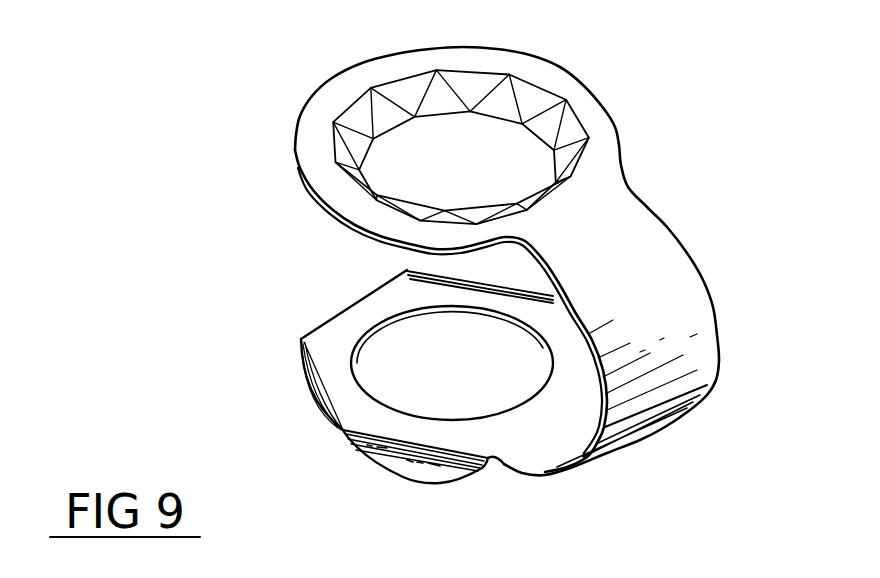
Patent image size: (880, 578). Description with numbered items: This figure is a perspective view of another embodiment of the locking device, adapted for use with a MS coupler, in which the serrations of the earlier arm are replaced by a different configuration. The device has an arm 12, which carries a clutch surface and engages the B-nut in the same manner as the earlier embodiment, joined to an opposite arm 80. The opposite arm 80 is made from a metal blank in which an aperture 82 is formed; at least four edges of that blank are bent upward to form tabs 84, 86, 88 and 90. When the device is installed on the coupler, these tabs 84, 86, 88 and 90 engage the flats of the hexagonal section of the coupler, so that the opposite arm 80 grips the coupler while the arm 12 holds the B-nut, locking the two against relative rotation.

The arm 12 is at (620, 150).
The opposite arm 80 is at (426, 384).
The aperture 82 is at (510, 368).
The tab 84 is at (400, 461).
The tab 86 is at (305, 375).
The tab 88 is at (347, 311).
The tab 90 is at (468, 279).